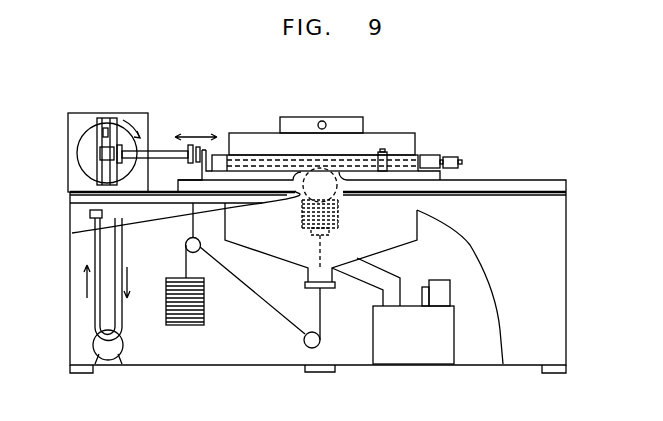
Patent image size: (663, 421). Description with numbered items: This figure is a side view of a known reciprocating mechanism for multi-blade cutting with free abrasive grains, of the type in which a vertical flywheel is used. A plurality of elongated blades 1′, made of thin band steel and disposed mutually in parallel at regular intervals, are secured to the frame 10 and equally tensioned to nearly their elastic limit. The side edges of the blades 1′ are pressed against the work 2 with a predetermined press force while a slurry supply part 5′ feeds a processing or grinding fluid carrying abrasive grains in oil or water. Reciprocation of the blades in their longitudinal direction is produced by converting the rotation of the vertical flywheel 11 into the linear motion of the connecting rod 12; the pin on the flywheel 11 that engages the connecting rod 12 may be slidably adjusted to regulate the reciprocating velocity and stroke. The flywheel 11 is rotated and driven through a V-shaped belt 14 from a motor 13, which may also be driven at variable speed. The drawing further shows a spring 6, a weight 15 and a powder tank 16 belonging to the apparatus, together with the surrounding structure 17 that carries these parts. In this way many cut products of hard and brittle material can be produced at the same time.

The elongated blades 1′ is at (400, 152).
The work 2 is at (302, 188).
The slurry supply part 5′ is at (367, 140).
The spring 6 is at (337, 211).
The frame 10 is at (428, 162).
The flywheel 11 is at (80, 157).
The connecting rod 12 is at (161, 152).
The motor 13 is at (112, 360).
The V-shaped belt 14 is at (95, 252).
The weight 15 is at (185, 320).
The powder tank 16 is at (410, 352).
The frame 17 is at (553, 279).